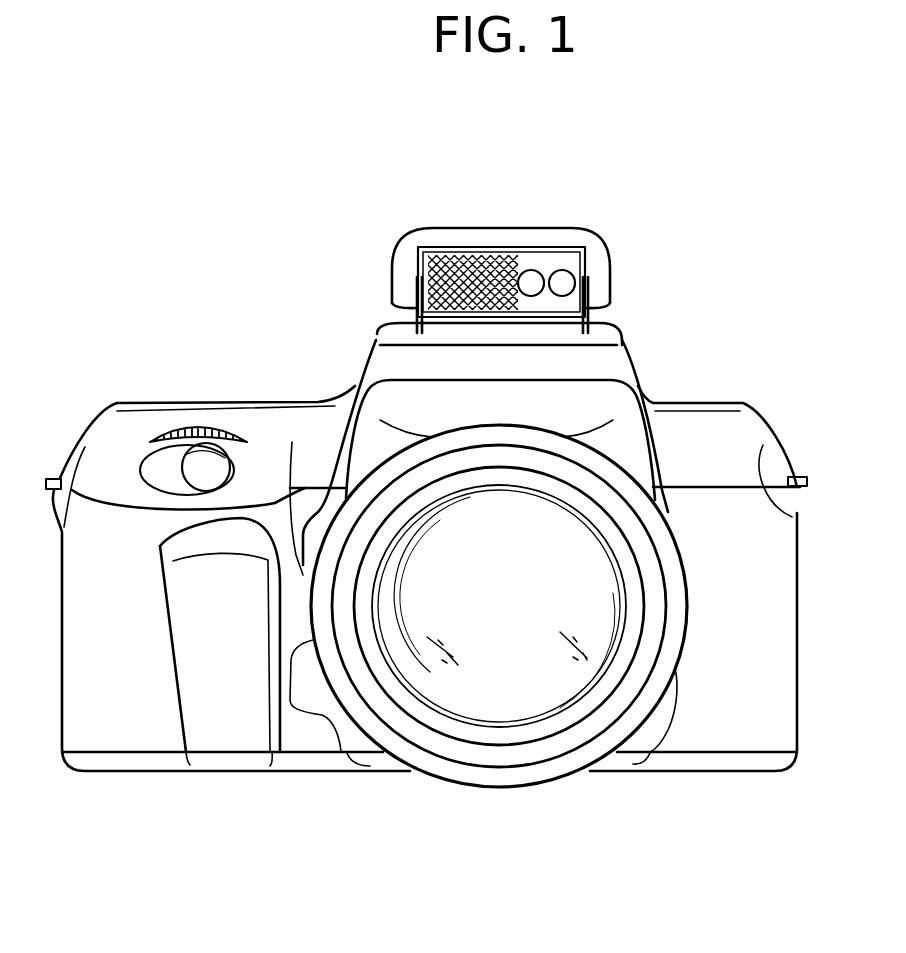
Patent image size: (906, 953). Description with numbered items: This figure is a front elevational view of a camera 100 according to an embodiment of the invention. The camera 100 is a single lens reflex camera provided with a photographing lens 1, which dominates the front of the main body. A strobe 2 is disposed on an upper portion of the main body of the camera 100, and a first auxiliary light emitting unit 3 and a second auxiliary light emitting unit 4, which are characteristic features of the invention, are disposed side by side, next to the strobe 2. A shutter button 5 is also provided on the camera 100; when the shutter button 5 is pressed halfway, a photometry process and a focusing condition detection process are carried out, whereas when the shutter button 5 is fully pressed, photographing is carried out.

The camera 100 is at (724, 338).
The photographing lens 1 is at (499, 708).
The strobe 2 is at (476, 262).
The first auxiliary light emitting unit 3 is at (528, 278).
The second auxiliary light emitting unit 4 is at (558, 282).
The shutter button 5 is at (198, 470).